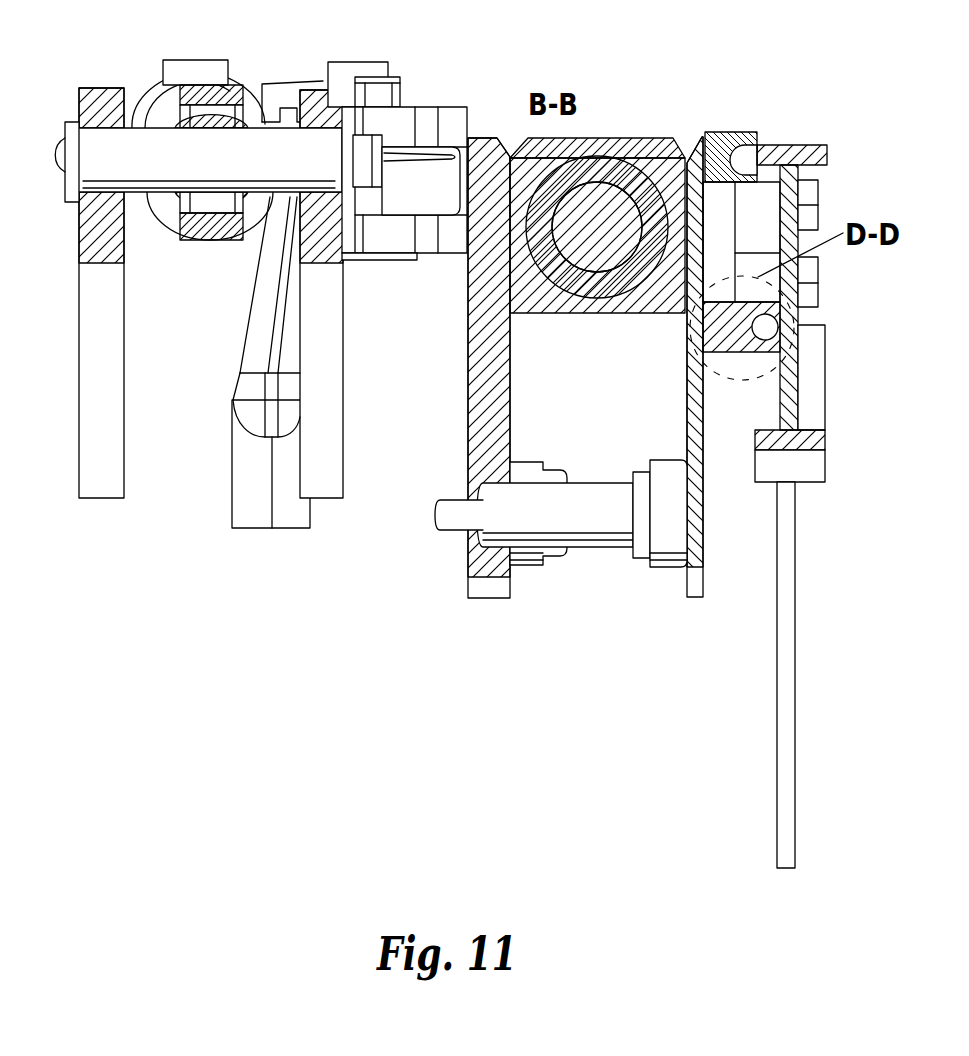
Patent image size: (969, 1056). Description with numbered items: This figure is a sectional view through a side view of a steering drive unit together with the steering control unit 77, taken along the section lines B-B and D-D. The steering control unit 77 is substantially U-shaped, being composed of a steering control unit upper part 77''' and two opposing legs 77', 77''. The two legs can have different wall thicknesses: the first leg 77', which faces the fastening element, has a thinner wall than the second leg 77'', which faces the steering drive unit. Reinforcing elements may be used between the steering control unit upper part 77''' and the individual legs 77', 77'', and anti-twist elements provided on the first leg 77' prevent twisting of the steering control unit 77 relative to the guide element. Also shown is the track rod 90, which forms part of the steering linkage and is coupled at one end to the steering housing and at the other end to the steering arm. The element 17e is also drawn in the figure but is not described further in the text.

The steering control unit 77 is at (444, 368).
The first leg 77' is at (628, 395).
The second leg 77'' is at (536, 539).
The steering control unit upper part 77''' is at (606, 97).
The track rod 90 is at (540, 290).
The guide rail 17e is at (727, 345).